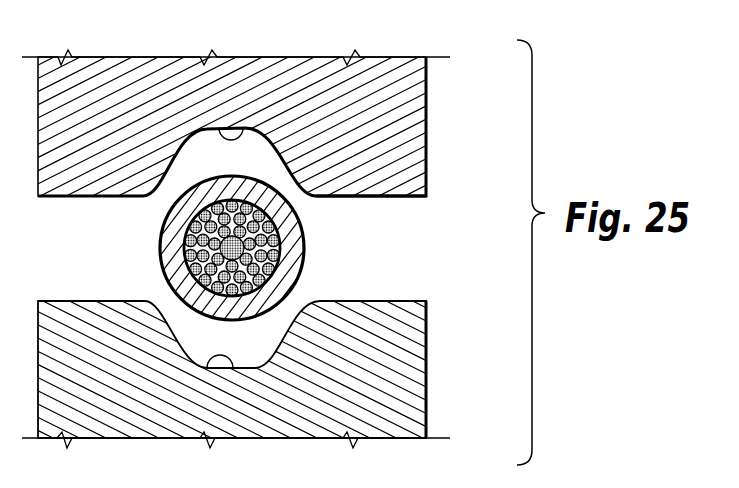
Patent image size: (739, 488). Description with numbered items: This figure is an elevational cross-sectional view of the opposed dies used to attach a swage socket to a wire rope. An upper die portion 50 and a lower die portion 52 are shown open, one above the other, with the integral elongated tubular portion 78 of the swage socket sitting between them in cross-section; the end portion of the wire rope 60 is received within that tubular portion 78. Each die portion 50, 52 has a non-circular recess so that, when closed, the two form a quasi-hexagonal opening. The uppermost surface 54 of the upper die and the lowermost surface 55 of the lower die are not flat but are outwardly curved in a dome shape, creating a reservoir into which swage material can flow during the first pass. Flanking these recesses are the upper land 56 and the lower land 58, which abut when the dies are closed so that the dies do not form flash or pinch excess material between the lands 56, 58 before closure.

The upper die portion 50 is at (393, 100).
The lower die portion 52 is at (395, 388).
The uppermost surface 54 is at (245, 128).
The lowermost surface 55 is at (207, 365).
The upper land 56 is at (375, 197).
The lower land 58 is at (373, 301).
The wire rope 60 is at (205, 251).
The tubular portion 78 is at (280, 229).